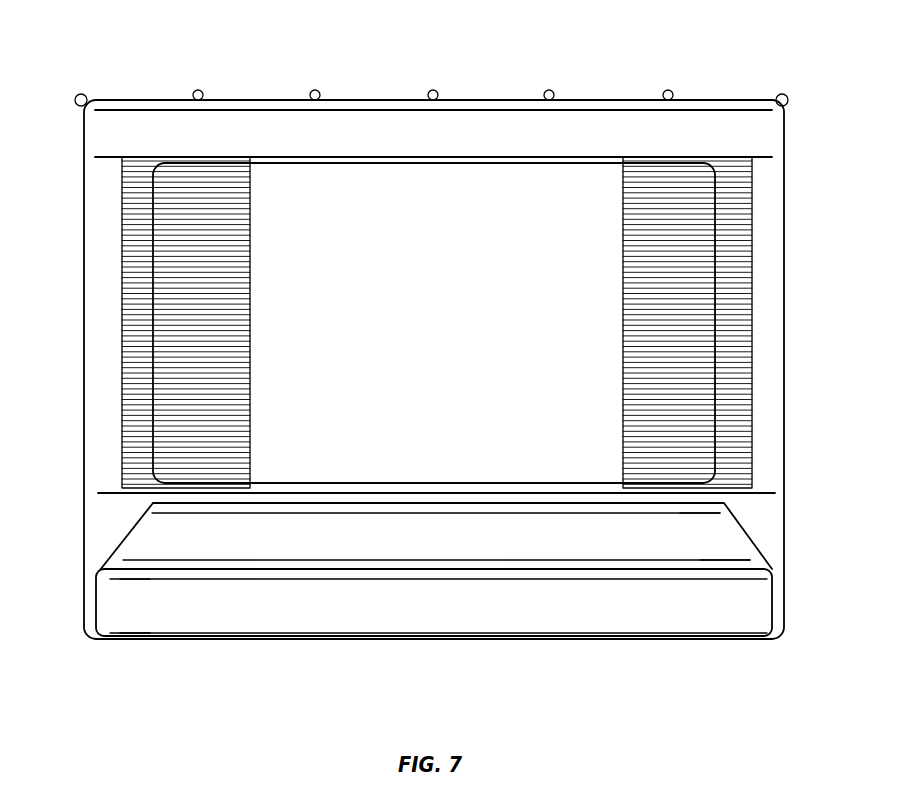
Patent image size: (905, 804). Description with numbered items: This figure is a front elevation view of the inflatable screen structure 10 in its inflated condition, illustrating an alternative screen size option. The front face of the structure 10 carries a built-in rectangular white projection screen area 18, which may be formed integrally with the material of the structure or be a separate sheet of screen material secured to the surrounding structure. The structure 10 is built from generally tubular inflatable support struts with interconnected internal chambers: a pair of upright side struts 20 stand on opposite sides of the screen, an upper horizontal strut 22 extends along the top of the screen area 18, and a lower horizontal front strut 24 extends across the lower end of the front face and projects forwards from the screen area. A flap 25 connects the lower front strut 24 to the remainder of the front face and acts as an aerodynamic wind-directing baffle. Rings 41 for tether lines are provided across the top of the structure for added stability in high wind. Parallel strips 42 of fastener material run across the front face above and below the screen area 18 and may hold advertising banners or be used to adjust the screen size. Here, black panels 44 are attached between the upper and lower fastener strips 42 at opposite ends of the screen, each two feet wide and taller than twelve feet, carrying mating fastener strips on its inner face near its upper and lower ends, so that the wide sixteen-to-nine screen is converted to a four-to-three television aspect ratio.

The inflatable screen structure 10 is at (748, 52).
The projection screen area 18 is at (428, 340).
The upright side struts 20 is at (93, 267).
The upper horizontal strut 22 is at (365, 127).
The lower horizontal front strut 24 is at (425, 612).
The flap 25 is at (143, 548).
The rings 41 is at (313, 90).
The parallel strips of fastener material 42 is at (580, 157).
The black panels 44 is at (225, 302).